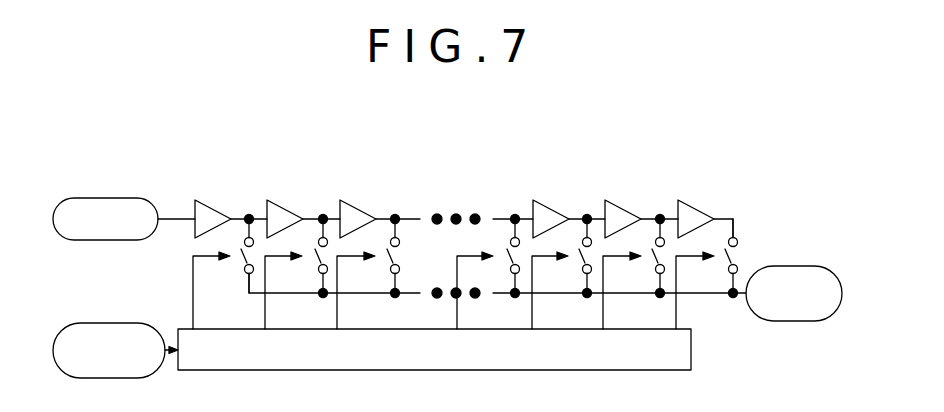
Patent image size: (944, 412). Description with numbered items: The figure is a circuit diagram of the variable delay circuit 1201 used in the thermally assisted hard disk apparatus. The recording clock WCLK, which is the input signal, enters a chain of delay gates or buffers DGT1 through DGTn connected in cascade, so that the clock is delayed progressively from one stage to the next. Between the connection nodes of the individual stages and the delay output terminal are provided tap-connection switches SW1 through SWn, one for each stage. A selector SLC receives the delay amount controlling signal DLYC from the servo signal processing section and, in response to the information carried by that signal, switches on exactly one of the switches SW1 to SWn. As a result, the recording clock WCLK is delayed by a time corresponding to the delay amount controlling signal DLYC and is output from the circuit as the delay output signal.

The variable delay circuit 1201 is at (479, 156).
The recording clock WCLK is at (105, 207).
The delay gate DGT1 is at (230, 190).
The delay gate DGTn is at (721, 190).
The switch SW1 is at (232, 266).
The switch SWn is at (737, 255).
The delay amount controlling signal DLYC is at (115, 338).
The selector SLC is at (691, 347).